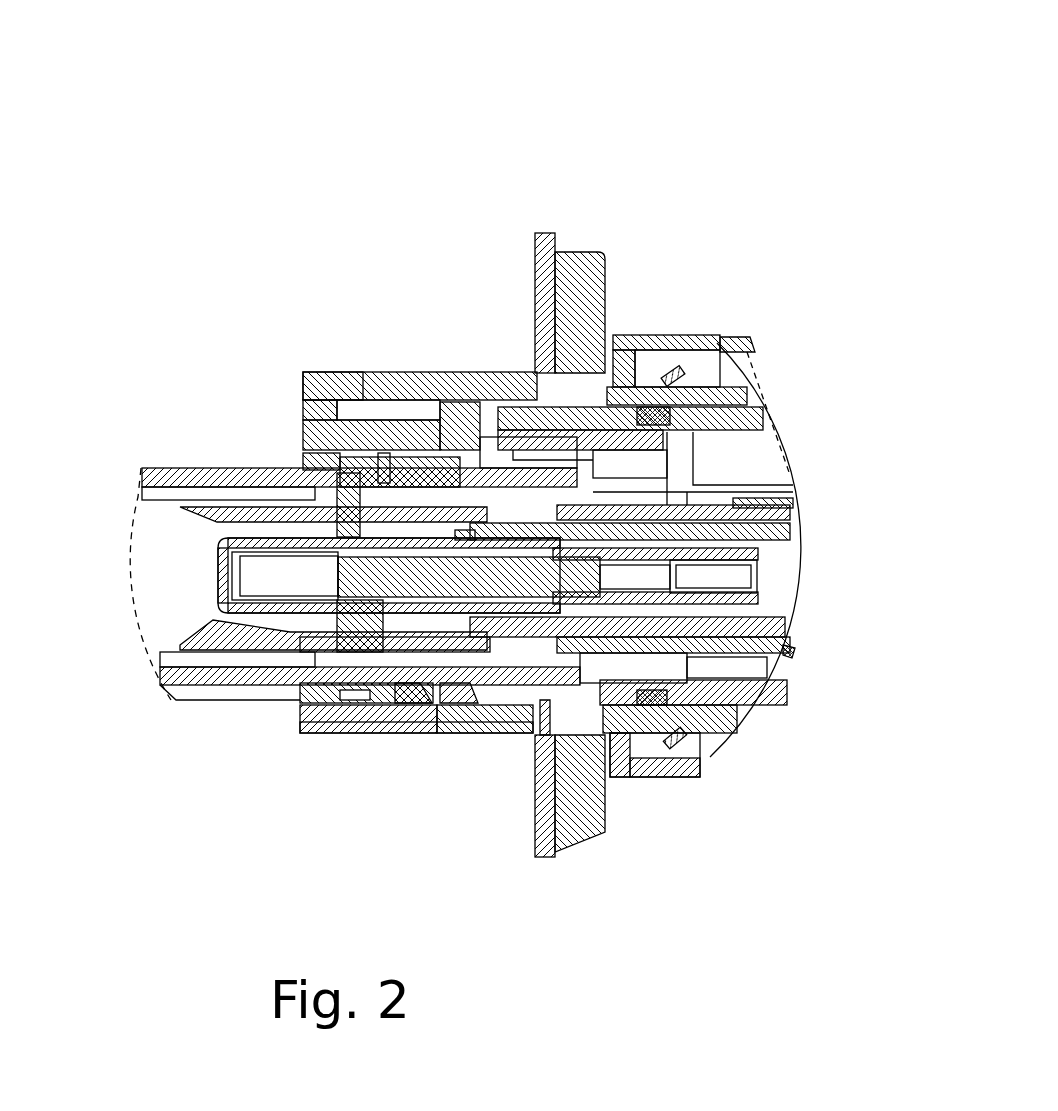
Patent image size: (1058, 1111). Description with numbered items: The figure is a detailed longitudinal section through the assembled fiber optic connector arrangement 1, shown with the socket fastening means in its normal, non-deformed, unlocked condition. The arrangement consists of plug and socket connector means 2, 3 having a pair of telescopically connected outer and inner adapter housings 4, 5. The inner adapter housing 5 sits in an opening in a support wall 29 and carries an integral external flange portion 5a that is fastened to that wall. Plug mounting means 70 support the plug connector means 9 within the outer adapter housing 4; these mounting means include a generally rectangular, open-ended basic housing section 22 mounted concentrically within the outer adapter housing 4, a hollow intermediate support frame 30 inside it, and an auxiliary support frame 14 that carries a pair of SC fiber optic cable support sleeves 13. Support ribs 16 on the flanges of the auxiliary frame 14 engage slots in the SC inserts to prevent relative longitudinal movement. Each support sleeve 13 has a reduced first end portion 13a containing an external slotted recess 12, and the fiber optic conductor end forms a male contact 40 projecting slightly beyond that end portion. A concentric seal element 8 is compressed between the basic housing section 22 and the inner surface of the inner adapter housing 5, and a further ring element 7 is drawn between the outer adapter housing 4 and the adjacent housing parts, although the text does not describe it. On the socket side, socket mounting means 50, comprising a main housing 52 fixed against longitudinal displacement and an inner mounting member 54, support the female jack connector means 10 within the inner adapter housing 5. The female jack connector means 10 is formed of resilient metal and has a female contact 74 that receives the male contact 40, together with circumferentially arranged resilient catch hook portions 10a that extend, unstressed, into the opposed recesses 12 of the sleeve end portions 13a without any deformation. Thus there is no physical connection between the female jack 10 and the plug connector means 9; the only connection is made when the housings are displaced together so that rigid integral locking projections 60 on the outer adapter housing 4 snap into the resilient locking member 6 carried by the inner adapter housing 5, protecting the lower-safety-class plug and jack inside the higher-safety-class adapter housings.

The fiber optic connector arrangement 1 is at (509, 195).
The plug connector means 2 is at (718, 332).
The socket connector means 3 is at (372, 375).
The outer adapter housing 4 is at (647, 335).
The inner adapter housing 5 is at (303, 380).
The external flange portion 5a is at (581, 253).
The resilient locking member 6 is at (675, 738).
The sealing ring 7 is at (705, 388).
The seal element 8 is at (765, 700).
The plug connector means 9 is at (585, 500).
The female jack connector means 10 is at (412, 690).
The catch hook portions 10a is at (465, 535).
The slotted recess 12 is at (440, 530).
The SC fiber optic cable support sleeve 13 is at (780, 627).
The first end portion 13a is at (300, 470).
The auxiliary support frame 14 is at (792, 512).
The support ribs 16 is at (757, 593).
The basic housing section 22 is at (763, 420).
The support wall 29 is at (552, 690).
The intermediate support frame 30 is at (527, 437).
The male contact 40 is at (340, 568).
The socket mounting means 50 is at (298, 710).
The main housing 52 is at (322, 735).
The inner mounting member 54 is at (603, 787).
The locking projections 60 is at (665, 775).
The plug mounting means 70 is at (790, 652).
The female contact 74 is at (420, 690).